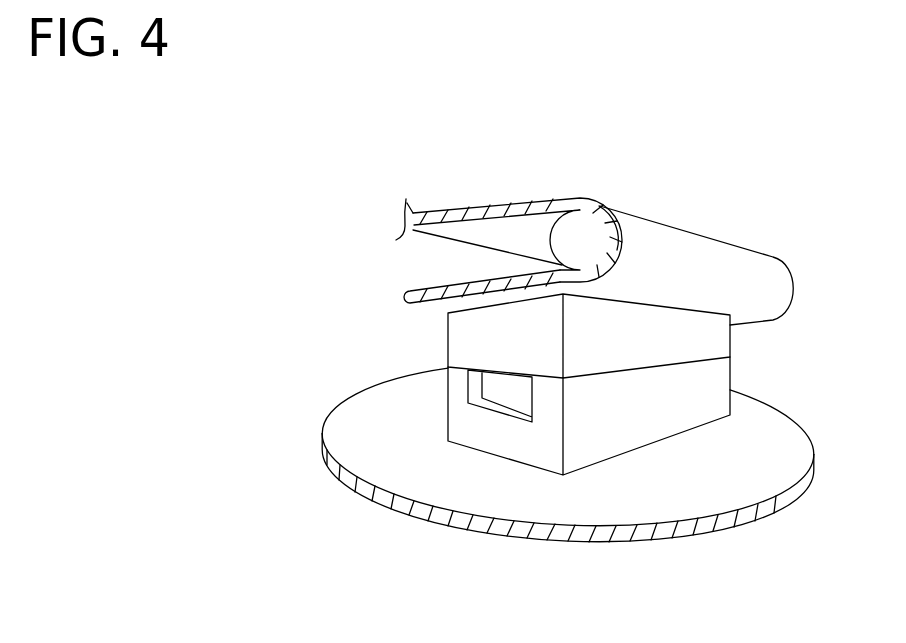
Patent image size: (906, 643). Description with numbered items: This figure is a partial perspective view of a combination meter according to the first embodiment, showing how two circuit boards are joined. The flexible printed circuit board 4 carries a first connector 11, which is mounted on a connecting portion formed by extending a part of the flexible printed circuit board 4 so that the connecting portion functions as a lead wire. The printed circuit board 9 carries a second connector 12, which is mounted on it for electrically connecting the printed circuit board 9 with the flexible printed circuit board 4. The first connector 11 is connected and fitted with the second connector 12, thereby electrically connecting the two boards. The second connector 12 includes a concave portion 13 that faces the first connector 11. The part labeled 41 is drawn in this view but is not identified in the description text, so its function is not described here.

The flexible printed circuit board 4 is at (540, 221).
The lower arm of clip 41 is at (463, 283).
The first connector 11 is at (445, 338).
The second connector 12 is at (466, 416).
The concave portion 13 is at (473, 387).
The printed circuit board 9 is at (365, 472).